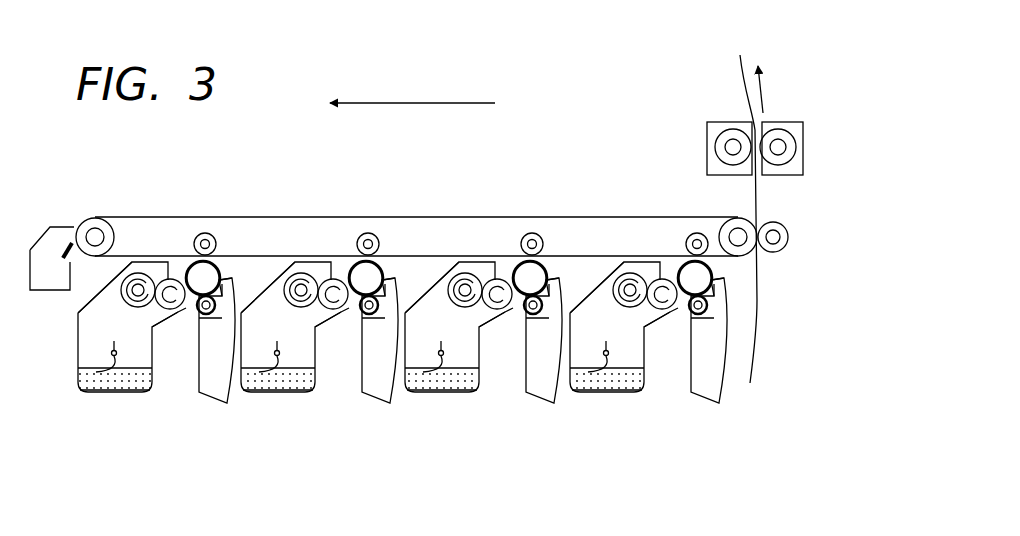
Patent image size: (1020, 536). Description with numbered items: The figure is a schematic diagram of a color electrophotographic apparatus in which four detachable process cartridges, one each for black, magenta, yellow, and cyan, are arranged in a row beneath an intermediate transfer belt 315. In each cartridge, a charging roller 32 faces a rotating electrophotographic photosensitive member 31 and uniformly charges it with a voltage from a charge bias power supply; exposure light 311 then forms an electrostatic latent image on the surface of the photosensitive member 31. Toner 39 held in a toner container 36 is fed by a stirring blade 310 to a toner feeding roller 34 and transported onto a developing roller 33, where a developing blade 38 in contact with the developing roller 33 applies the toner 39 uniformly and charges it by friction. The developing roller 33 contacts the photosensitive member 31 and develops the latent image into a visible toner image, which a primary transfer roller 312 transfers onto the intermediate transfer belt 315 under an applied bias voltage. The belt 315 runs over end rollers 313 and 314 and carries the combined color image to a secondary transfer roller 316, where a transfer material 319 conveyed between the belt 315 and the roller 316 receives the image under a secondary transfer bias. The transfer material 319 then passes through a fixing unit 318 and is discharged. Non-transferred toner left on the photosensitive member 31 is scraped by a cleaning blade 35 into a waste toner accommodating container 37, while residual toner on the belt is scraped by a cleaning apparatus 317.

The electrophotographic photosensitive member 31 is at (220, 262).
The charging roller 32 is at (199, 316).
The developing roller 33 is at (168, 280).
The toner feeding roller 34 is at (131, 279).
The cleaning blade 35 is at (238, 300).
The toner container 36 is at (82, 288).
The waste toner accommodating container 37 is at (212, 410).
The developing blade 38 is at (184, 311).
The toner 39 is at (81, 394).
The stirring blade 310 is at (117, 394).
The exposure light 311 is at (168, 402).
The primary transfer roller 312 is at (197, 236).
The belt tension roller 313 is at (88, 218).
The belt drive roller 314 is at (756, 213).
The intermediate transfer belt 315 is at (688, 216).
The secondary transfer roller 316 is at (789, 233).
The cleaning apparatus 317 is at (40, 299).
The fixing unit 318 is at (779, 119).
The transfer material 319 is at (758, 295).